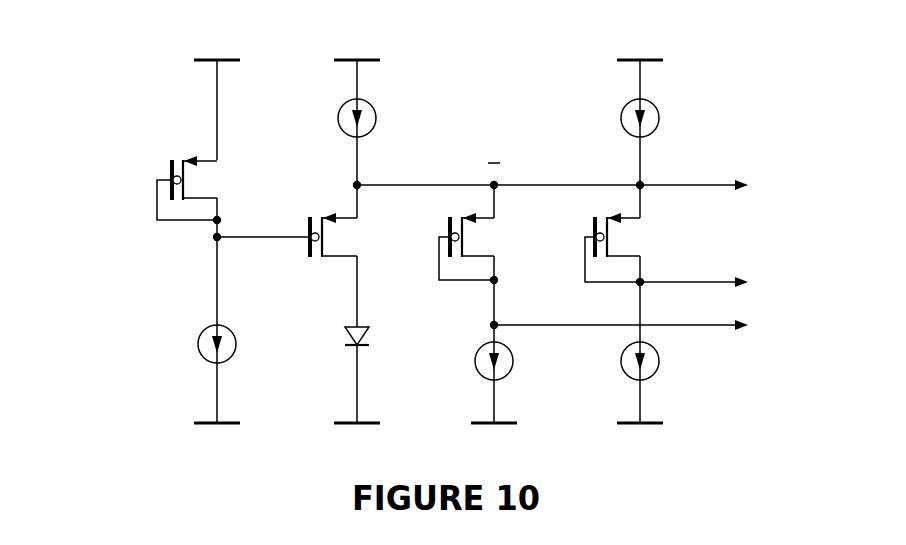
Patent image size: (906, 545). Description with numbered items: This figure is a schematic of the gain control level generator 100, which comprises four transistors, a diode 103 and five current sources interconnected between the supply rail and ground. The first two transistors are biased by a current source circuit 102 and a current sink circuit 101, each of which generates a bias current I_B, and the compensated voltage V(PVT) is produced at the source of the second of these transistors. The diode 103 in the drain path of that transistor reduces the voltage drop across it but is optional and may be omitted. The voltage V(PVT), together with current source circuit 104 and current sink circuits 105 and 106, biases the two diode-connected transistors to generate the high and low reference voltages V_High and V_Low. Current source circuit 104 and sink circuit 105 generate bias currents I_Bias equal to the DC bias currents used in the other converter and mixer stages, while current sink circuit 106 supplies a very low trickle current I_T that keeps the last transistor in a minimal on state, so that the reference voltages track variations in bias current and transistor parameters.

The gain control level generator 100 is at (150, 399).
The current sink circuit 101 is at (197, 336).
The current source circuit 102 is at (337, 110).
The diode 103 is at (360, 337).
The current source circuit 104 is at (620, 110).
The current sink circuit 105 is at (474, 352).
The current sink circuit 106 is at (620, 352).